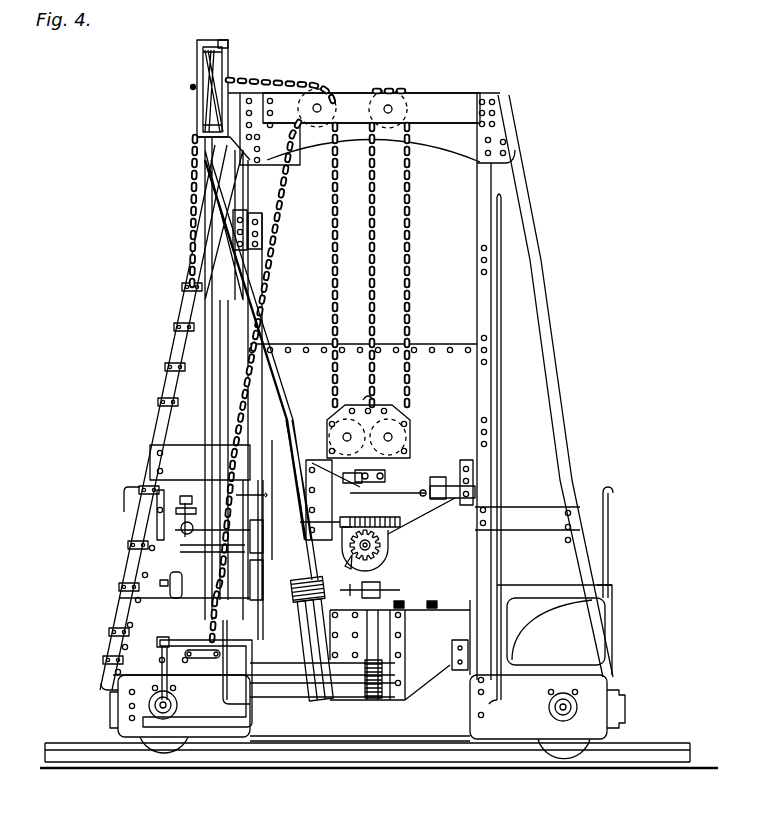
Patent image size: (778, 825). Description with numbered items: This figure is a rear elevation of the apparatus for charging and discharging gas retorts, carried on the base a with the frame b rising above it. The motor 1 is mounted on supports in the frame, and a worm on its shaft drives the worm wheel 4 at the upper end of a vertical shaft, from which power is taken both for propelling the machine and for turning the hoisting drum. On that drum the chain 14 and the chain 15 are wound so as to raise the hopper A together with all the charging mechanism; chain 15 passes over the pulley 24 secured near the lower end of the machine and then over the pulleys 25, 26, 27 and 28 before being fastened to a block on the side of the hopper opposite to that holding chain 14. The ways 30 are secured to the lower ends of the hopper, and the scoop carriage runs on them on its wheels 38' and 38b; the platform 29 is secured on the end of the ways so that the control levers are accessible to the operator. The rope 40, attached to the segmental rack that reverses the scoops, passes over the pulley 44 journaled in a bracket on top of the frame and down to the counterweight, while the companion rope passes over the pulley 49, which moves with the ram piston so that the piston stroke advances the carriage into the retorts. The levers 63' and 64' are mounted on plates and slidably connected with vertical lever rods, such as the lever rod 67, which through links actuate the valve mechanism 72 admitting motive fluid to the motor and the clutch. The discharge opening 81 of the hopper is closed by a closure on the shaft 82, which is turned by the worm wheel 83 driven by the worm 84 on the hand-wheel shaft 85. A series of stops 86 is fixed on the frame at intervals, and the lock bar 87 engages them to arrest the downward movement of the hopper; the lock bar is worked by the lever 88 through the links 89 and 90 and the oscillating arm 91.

The motor 1 is at (160, 510).
The worm wheel 4 is at (175, 530).
The chain 14 is at (254, 78).
The chain 15 is at (277, 243).
The pulley 24 is at (205, 616).
The pulley 25 is at (325, 120).
The pulley 26 is at (328, 430).
The pulley 27 is at (410, 432).
The pulley 28 is at (409, 112).
The platform 29 is at (211, 722).
The ways 30 is at (383, 628).
The wheels 38' is at (352, 639).
The wheels 38b is at (378, 673).
The rope 40 is at (272, 396).
The pulley 44 is at (208, 100).
The pulley 49 is at (419, 595).
The lever 63' is at (184, 577).
The lever 64' is at (194, 554).
The lever rod 67 is at (266, 345).
The valve mechanism 72 is at (178, 598).
The discharge opening 81 is at (347, 561).
The shaft 82 is at (385, 549).
The worm wheel 83 is at (395, 562).
The worm 84 is at (386, 510).
The shaft 85 is at (405, 527).
The stops 86 is at (484, 252).
The lock bar 87 is at (449, 487).
The lever 88 is at (270, 500).
The link 89 is at (357, 481).
The link 90 is at (432, 500).
The oscillating arm 91 is at (372, 477).
The base a is at (363, 717).
The frame b is at (184, 313).
The hopper A is at (374, 386).